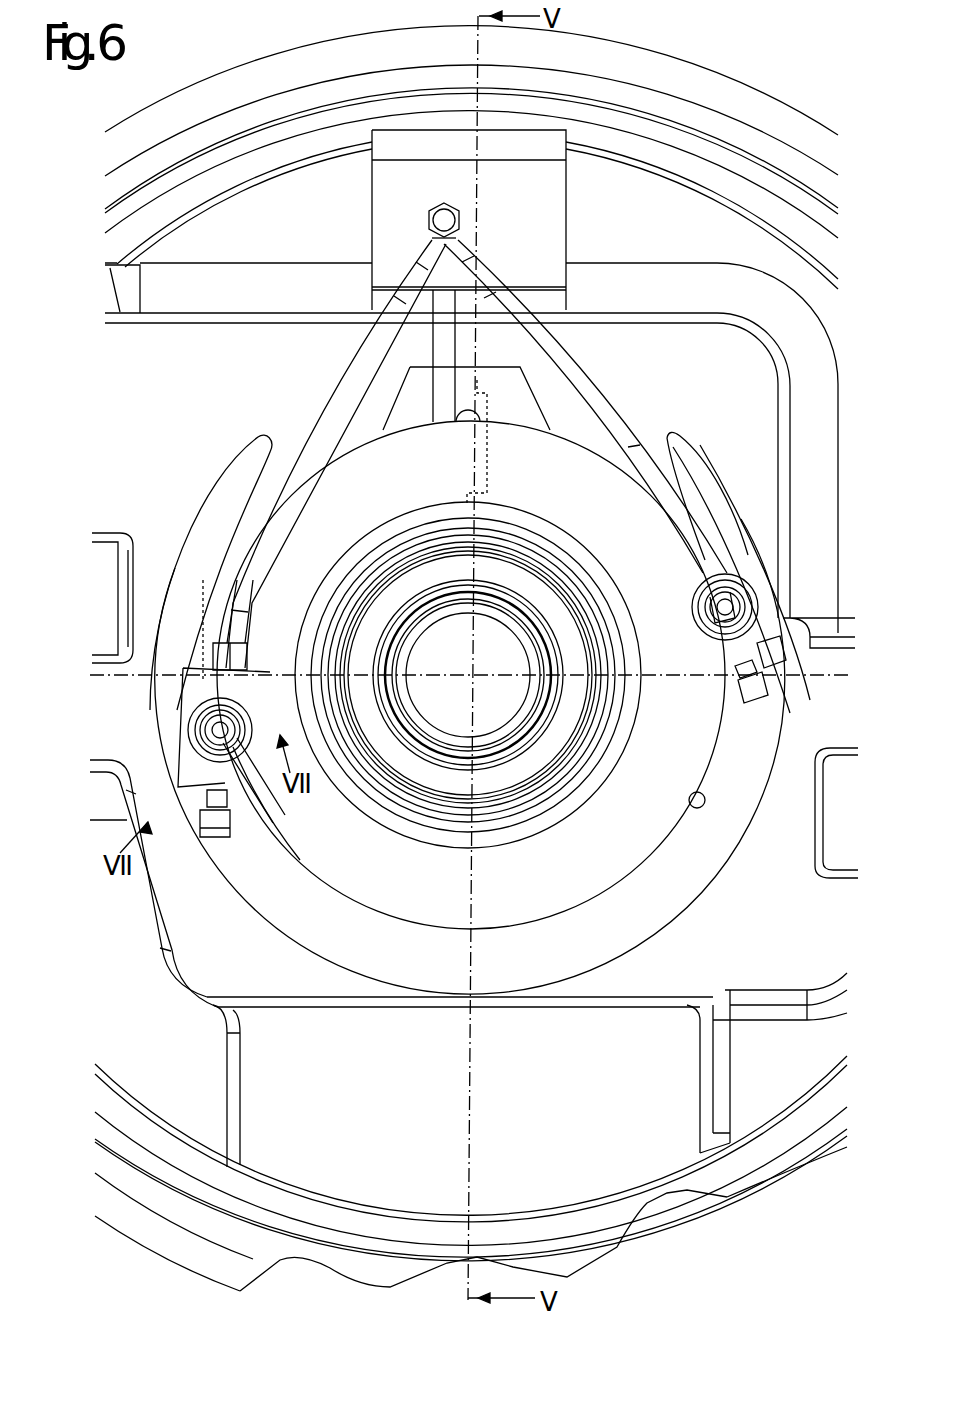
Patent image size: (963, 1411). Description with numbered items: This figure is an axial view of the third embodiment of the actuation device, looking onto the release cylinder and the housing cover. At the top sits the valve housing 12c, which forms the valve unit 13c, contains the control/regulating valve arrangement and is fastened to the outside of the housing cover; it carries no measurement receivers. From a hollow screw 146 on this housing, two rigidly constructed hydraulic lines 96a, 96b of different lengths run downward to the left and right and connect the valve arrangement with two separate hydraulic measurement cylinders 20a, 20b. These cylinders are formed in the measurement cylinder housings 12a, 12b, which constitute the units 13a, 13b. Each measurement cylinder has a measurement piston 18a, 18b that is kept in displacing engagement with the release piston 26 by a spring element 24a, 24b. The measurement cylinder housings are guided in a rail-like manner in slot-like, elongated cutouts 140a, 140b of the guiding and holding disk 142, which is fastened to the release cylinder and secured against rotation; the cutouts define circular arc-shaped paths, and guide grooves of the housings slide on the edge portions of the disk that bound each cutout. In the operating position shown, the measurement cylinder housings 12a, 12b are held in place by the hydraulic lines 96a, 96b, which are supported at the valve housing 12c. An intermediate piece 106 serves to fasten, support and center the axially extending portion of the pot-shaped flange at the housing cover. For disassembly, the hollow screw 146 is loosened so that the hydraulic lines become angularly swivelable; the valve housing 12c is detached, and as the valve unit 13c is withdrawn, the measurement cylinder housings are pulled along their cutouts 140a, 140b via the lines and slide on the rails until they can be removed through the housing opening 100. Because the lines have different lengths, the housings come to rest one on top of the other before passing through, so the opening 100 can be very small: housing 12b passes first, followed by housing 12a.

The housing opening 100 is at (550, 305).
The guiding and holding disk 142 is at (563, 953).
The release piston 26 is at (633, 843).
The measurement cylinder housing 12a is at (240, 823).
The measurement cylinder housing 12b is at (760, 627).
The valve housing 12c is at (545, 218).
The unit 13a is at (190, 725).
The unit 13b is at (760, 643).
The valve unit 13c is at (550, 183).
The measurement piston 18a is at (205, 765).
The measurement piston 18b is at (725, 540).
The hydraulic measurement cylinder 20a is at (275, 720).
The hydraulic measurement cylinder 20b is at (760, 590).
The spring element 24a is at (250, 812).
The spring element 24b is at (720, 620).
The hydraulic line 96a is at (352, 404).
The hydraulic line 96b is at (590, 397).
The intermediate piece 106 is at (258, 507).
The cutout 140a is at (193, 620).
The cutout 140b is at (670, 437).
The hollow screw 146 is at (432, 230).